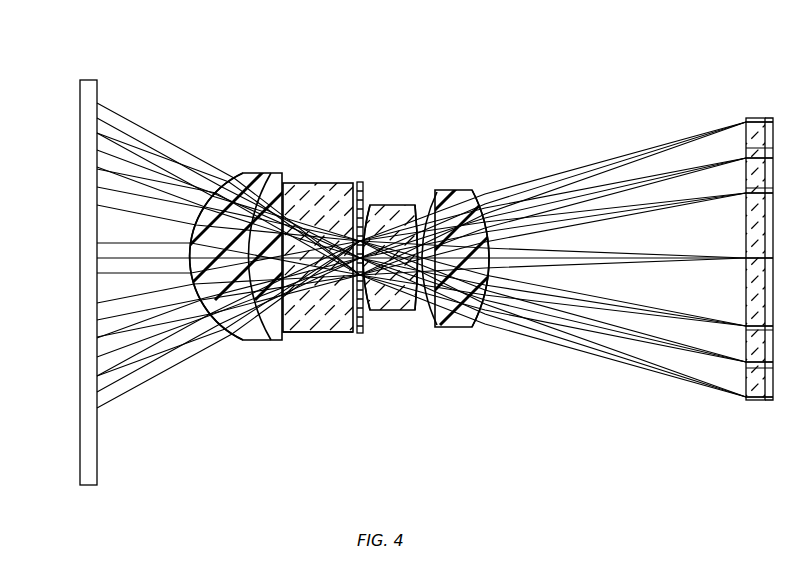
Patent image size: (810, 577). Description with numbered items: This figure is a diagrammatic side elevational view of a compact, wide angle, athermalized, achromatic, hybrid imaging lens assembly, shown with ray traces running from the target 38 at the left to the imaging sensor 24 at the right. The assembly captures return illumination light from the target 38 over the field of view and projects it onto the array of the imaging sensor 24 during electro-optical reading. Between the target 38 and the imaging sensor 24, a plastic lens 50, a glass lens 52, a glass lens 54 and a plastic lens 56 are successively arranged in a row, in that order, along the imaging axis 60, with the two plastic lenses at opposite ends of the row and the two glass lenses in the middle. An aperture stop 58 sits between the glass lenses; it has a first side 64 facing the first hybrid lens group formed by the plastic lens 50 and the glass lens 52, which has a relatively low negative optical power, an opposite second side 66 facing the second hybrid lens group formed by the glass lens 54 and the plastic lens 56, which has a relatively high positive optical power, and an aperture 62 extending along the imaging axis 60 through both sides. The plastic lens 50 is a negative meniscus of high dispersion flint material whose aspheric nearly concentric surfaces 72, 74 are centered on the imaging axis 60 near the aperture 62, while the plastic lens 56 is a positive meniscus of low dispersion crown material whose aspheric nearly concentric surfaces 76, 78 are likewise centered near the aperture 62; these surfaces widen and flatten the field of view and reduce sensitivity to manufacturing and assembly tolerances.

The imaging sensor 24 is at (773, 109).
The target 38 is at (90, 78).
The imaging axis 60 is at (107, 258).
The plastic lens 50 is at (297, 256).
The glass lens 52 is at (390, 263).
The aperture stop 58 is at (359, 182).
The glass lens 54 is at (440, 269).
The plastic lens 56 is at (521, 240).
The aspheric nearly concentric surface 72 is at (234, 341).
The aspheric nearly concentric surface 74 is at (271, 336).
The first side 64 is at (349, 333).
The second side 66 is at (366, 290).
The aperture 62 is at (390, 285).
The aspheric nearly concentric surface 78 is at (432, 200).
The aspheric nearly concentric surface 76 is at (481, 196).